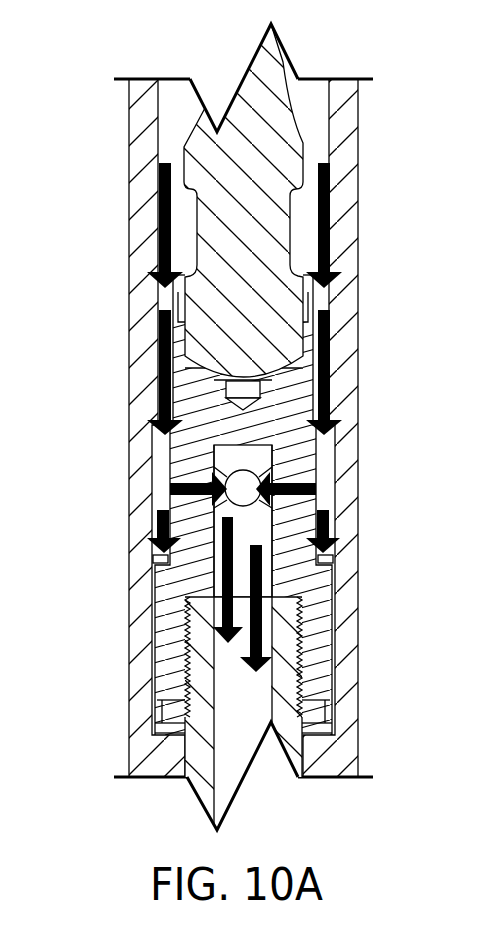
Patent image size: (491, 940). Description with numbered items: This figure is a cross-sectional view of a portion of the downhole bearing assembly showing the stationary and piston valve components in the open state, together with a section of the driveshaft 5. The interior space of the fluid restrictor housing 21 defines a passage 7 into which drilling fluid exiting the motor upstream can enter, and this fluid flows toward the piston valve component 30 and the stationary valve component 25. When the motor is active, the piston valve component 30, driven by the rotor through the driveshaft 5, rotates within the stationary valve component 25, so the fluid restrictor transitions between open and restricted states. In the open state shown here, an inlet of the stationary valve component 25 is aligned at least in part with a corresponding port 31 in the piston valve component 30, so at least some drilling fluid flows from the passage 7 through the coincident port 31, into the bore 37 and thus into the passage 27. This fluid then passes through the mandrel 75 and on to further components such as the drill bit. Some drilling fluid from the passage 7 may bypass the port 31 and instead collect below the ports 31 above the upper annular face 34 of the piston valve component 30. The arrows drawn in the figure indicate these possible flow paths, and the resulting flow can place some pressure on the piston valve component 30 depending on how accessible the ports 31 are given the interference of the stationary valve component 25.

The driveshaft 5 is at (252, 173).
The passage 7 is at (292, 310).
The fluid restrictor housing 21 is at (293, 428).
The stationary valve component 25 is at (314, 505).
The passage 27 is at (255, 711).
The piston valve component 30 is at (104, 639).
The port 31 is at (171, 495).
The upper annular face 34 is at (387, 632).
The bore 37 is at (343, 594).
The mandrel 75 is at (177, 776).